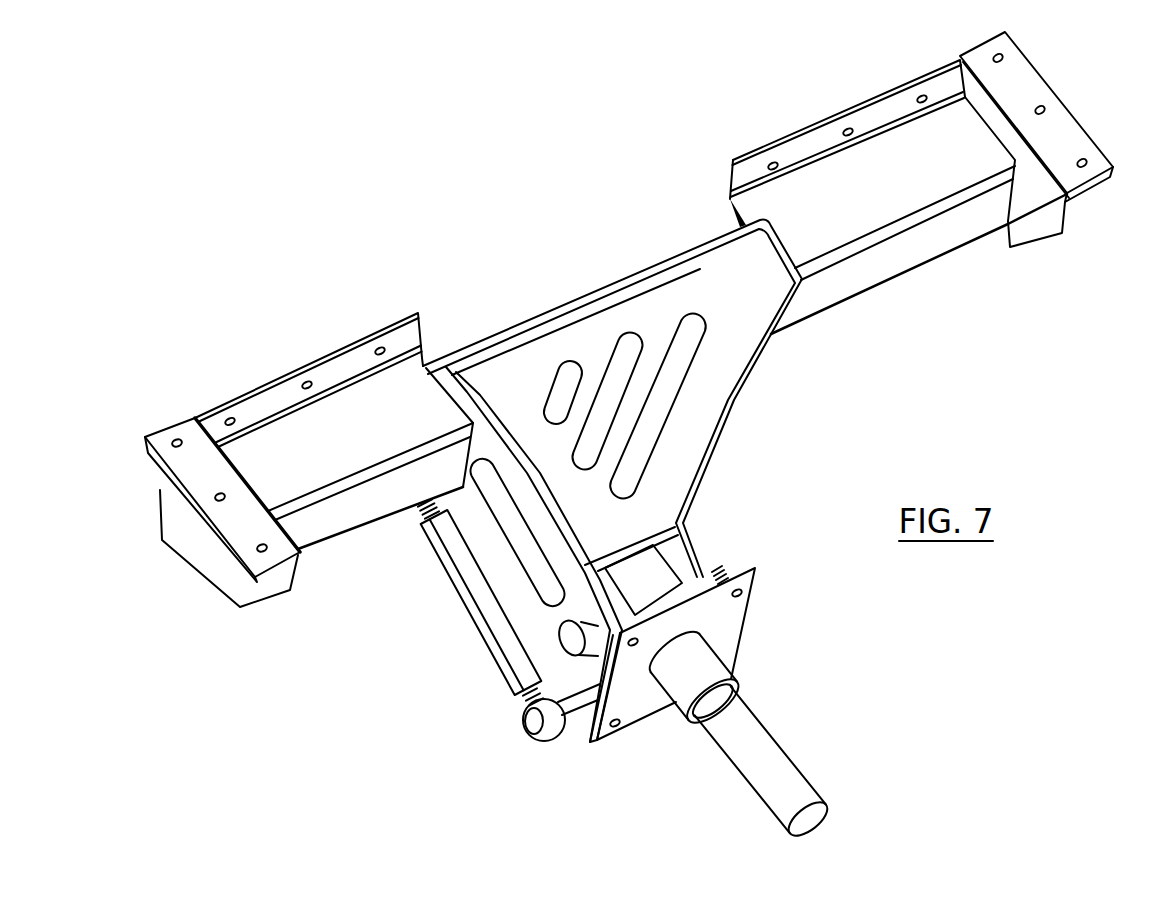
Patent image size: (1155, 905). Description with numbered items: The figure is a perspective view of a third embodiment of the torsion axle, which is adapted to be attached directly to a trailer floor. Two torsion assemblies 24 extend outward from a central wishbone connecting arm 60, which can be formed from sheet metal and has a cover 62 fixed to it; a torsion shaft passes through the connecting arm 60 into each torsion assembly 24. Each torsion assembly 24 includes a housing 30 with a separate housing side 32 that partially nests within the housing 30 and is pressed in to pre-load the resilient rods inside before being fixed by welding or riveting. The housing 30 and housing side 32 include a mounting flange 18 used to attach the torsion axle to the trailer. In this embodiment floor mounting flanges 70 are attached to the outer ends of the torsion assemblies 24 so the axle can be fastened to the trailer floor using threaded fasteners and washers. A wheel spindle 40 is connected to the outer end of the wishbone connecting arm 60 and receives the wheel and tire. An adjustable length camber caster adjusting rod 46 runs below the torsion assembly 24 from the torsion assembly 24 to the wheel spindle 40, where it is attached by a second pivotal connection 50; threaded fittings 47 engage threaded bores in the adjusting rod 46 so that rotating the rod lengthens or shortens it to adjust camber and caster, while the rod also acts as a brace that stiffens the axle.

The mounting flange 18 is at (428, 308).
The torsion assembly 24 is at (266, 362).
The housing 30 is at (323, 528).
The housing side 32 is at (748, 157).
The wheel spindle 40 is at (742, 717).
The adjustable length camber caster adjusting rod 46 is at (483, 633).
The threaded fitting 47 is at (533, 728).
The second pivotal connection 50 is at (578, 735).
The wishbone connecting arm 60 is at (478, 395).
The cover 62 is at (698, 288).
The floor mounting flange 70 is at (188, 468).